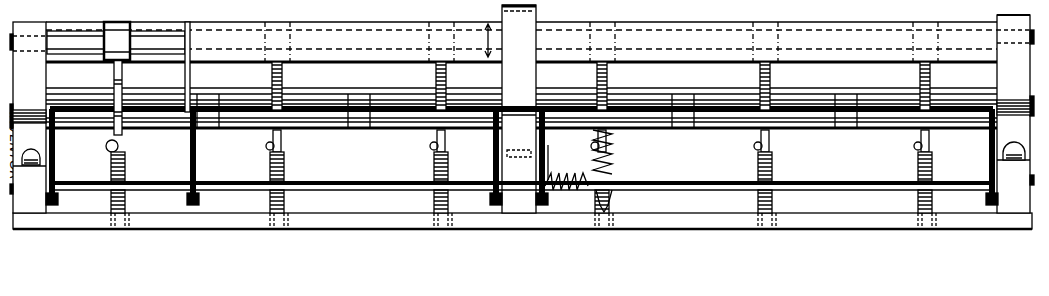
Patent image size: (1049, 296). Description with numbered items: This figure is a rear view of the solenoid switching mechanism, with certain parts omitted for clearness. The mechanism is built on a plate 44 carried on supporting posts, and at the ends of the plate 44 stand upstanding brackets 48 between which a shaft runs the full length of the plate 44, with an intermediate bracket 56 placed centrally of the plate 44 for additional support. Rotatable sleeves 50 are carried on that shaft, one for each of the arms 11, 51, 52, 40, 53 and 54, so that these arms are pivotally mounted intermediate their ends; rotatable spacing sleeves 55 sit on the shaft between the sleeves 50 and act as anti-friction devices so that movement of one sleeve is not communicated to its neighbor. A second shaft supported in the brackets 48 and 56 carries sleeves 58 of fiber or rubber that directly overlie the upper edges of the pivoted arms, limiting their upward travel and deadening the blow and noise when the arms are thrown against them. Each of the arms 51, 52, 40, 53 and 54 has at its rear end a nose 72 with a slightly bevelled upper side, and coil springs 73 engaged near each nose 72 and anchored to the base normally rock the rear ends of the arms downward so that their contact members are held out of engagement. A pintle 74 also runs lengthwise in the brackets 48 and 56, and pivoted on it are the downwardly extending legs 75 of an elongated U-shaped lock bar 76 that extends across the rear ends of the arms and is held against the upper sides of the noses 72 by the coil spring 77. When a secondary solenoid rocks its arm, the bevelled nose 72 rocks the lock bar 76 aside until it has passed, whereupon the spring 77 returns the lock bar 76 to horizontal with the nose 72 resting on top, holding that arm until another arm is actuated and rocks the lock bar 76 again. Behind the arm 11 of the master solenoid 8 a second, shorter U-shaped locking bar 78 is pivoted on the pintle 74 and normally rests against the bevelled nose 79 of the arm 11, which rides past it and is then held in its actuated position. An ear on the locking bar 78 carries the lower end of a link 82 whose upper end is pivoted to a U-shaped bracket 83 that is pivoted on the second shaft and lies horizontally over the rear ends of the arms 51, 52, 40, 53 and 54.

The master solenoid 8 is at (28, 73).
The pivoted arm 11 is at (123, 70).
The pivoted arm 40 is at (597, 77).
The plate 44 is at (333, 220).
The upstanding brackets 48 is at (1005, 55).
The rotatable sleeves 50 is at (148, 97).
The pivoted arm 51 is at (272, 78).
The pivoted arm 52 is at (436, 79).
The pivoted arm 53 is at (760, 80).
The pivoted arm 54 is at (920, 78).
The rotatable spacing sleeves 55 is at (196, 101).
The intermediate bracket 56 is at (538, 80).
The sleeves 58 is at (118, 23).
The nose 72 is at (282, 146).
The coil springs 73 is at (126, 170).
The pintle 74 is at (665, 182).
The downwardly extending legs 75 is at (196, 150).
The lock bar 76 is at (636, 122).
The coil spring 77 is at (585, 170).
The locking bar 78 is at (92, 135).
The nose 79 is at (120, 142).
The link 82 is at (190, 80).
The U-shaped bracket 83 is at (246, 40).